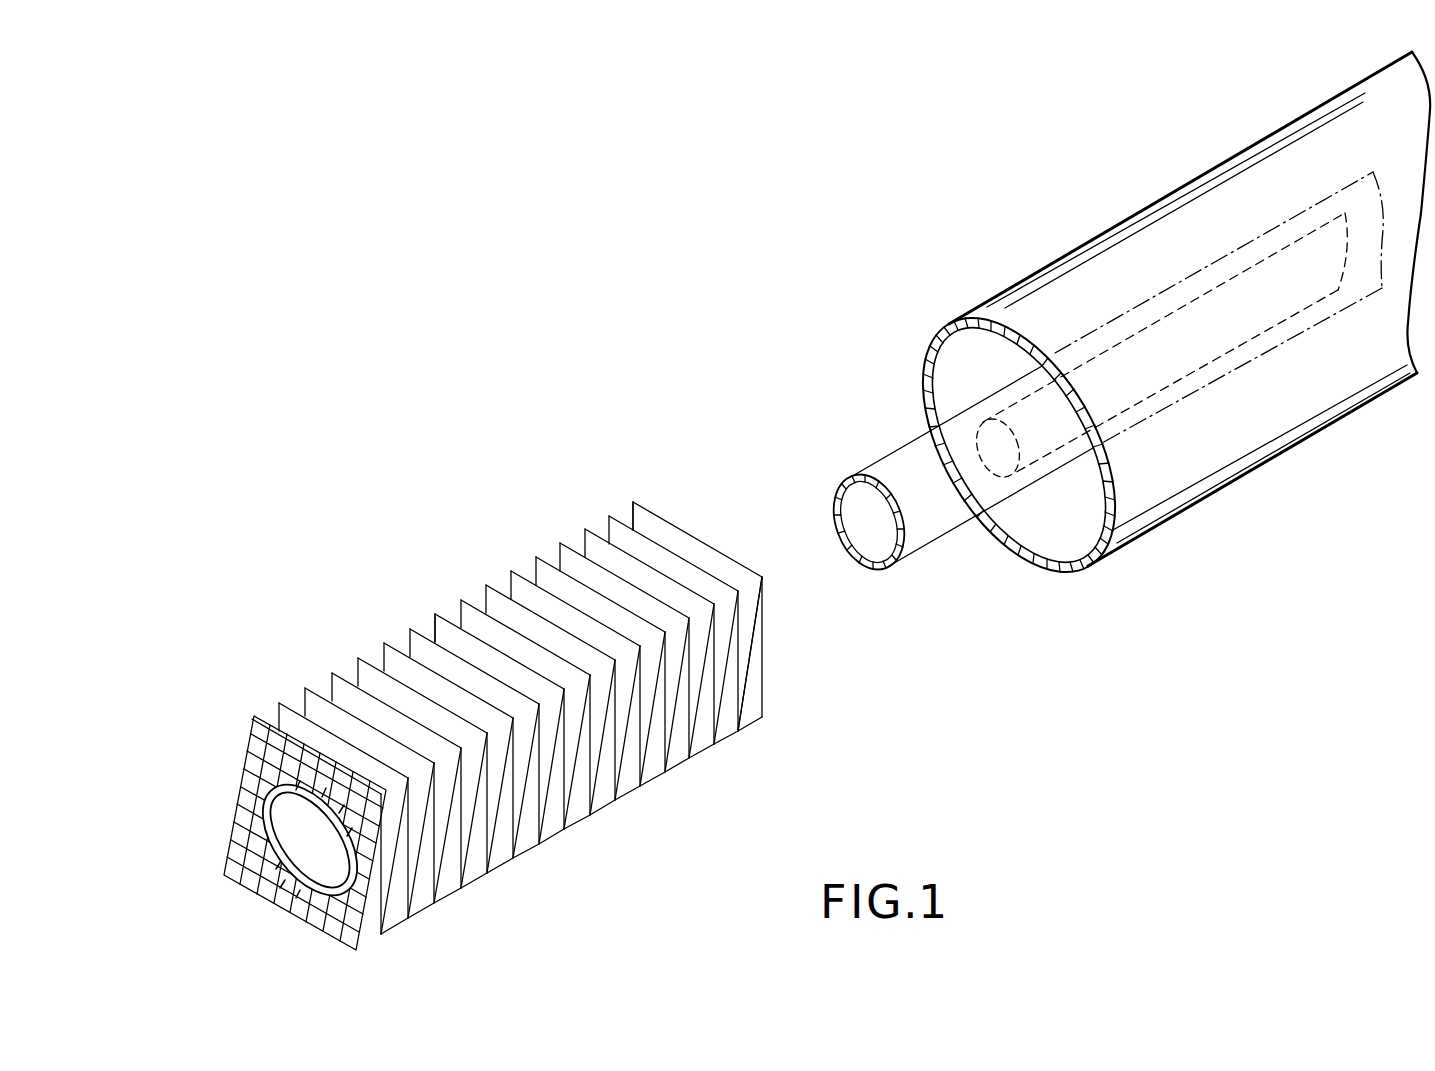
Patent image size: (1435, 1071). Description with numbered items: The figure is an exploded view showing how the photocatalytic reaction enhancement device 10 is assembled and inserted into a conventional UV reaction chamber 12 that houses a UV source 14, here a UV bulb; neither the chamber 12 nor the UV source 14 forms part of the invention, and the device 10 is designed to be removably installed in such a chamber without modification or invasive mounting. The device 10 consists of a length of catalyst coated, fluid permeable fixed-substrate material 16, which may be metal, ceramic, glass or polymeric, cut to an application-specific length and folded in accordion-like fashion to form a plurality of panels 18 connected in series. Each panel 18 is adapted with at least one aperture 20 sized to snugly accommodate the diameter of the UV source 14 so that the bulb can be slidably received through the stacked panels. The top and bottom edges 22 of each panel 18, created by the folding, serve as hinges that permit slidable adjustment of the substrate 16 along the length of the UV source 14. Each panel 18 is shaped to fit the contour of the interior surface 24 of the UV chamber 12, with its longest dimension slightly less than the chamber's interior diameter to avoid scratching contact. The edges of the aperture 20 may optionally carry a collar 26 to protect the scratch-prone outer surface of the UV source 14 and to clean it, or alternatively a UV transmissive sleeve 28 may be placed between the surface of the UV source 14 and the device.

The photocatalytic reaction enhancement device 10 is at (595, 838).
The UV reaction chamber 12 is at (1252, 462).
The UV source 14 is at (1000, 430).
The catalyst coated, fluid permeable fixed-substrate material 16 is at (651, 517).
The panels 18 is at (262, 732).
The aperture 20 is at (317, 845).
The top and bottom edges 22 is at (437, 627).
The interior surface 24 is at (963, 368).
The collar 26 is at (280, 837).
The UV transmissive sleeve 28 is at (942, 535).